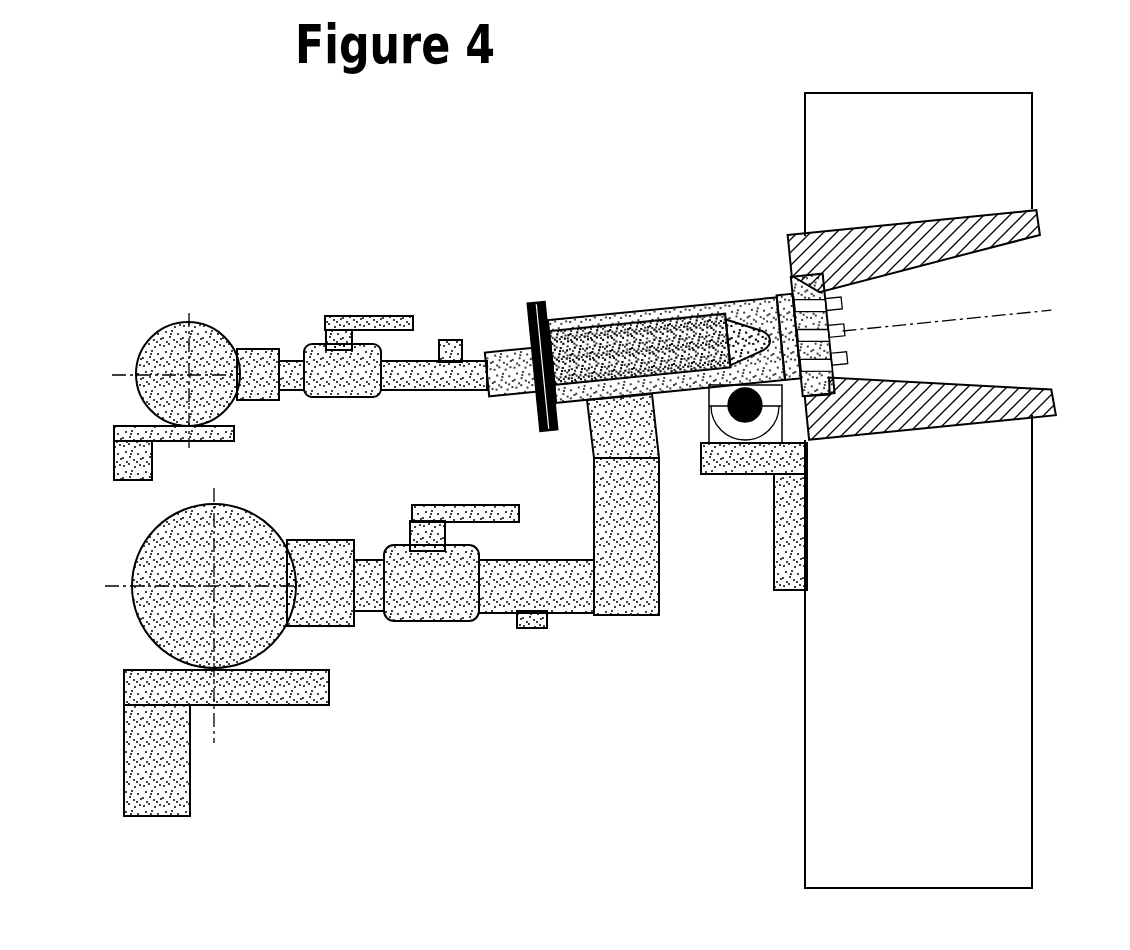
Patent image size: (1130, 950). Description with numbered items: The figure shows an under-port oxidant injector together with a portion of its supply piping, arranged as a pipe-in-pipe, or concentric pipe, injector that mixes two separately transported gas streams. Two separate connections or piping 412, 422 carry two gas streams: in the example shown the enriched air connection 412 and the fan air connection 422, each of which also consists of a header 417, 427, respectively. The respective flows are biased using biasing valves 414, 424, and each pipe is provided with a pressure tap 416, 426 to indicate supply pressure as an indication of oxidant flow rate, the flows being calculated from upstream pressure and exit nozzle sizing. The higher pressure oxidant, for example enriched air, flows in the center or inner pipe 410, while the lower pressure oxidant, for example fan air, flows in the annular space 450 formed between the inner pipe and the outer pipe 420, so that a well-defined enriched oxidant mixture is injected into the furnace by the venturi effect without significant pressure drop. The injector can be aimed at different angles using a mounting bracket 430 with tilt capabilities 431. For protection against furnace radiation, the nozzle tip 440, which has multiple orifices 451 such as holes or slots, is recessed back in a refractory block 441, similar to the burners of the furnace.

The inner pipe 410 is at (640, 328).
The enriched air connection piping 412 is at (413, 357).
The biasing valve 414 is at (310, 338).
The pressure tap 416 is at (455, 335).
The header 417 is at (140, 336).
The outer pipe 420 is at (673, 392).
The fan air connection piping 422 is at (655, 558).
The biasing valve 424 is at (393, 619).
The pressure tap 426 is at (533, 627).
The header 427 is at (142, 540).
The mounting bracket 430 is at (723, 457).
The tilt capability 431 is at (772, 417).
The nozzle tip 440 is at (783, 292).
The refractory block 441 is at (1012, 237).
The annular space 450 is at (670, 314).
The orifices 451 is at (840, 357).